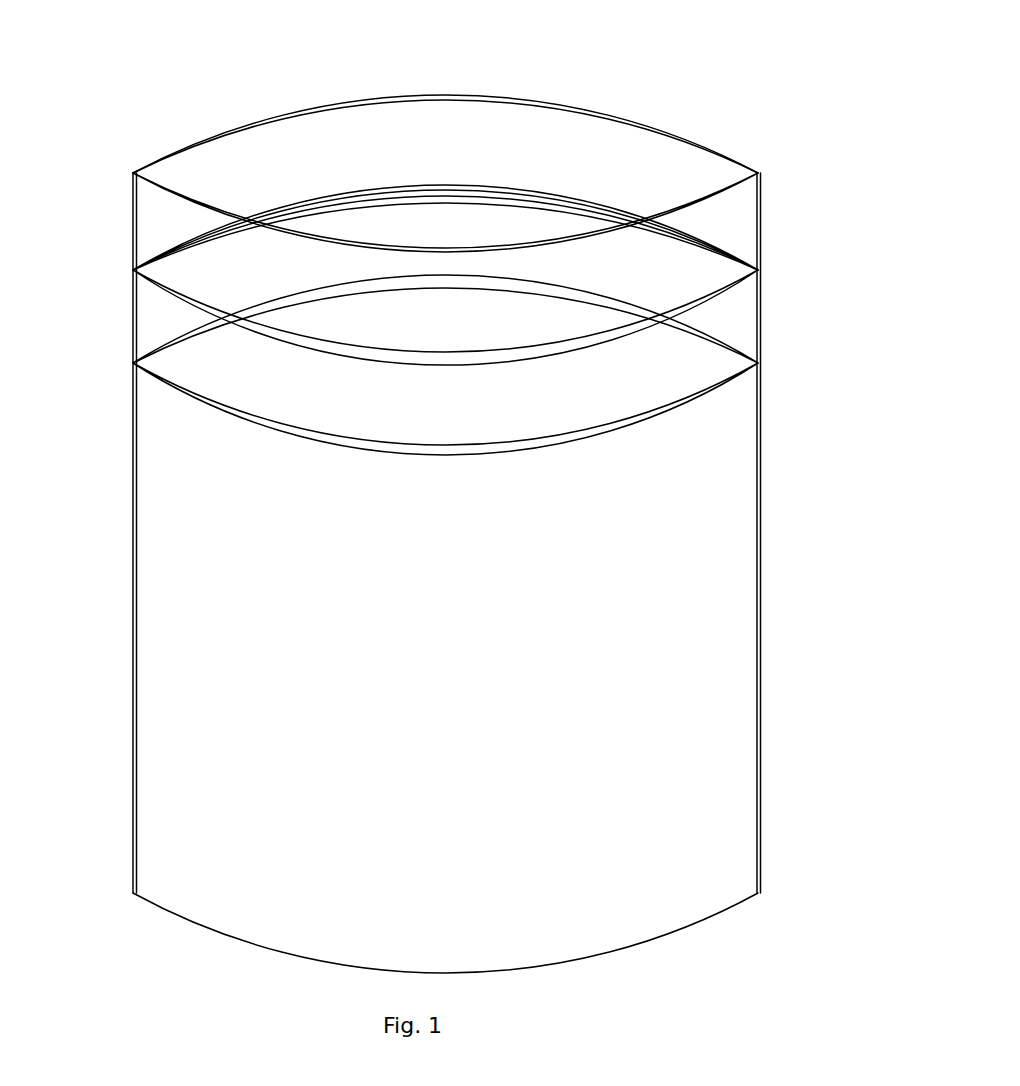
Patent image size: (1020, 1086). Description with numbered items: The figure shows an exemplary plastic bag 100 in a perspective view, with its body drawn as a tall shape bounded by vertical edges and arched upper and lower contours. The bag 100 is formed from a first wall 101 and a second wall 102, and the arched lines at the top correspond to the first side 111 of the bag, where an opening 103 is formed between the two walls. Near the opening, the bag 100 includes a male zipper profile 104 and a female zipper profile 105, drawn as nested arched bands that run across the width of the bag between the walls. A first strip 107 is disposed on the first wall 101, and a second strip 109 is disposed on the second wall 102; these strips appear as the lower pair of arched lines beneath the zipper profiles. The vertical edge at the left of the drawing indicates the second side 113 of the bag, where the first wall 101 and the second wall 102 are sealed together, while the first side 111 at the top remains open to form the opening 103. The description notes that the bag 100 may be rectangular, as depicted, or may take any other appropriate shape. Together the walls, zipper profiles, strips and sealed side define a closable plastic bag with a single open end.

The plastic bag 100 is at (518, 780).
The first wall 101 is at (720, 190).
The second wall 102 is at (720, 158).
The opening 103 is at (447, 225).
The male zipper profile 104 is at (720, 295).
The female zipper profile 105 is at (737, 257).
The first strip 107 is at (690, 398).
The second strip 109 is at (730, 350).
The first side 111 is at (218, 133).
The second side 113 is at (133, 522).